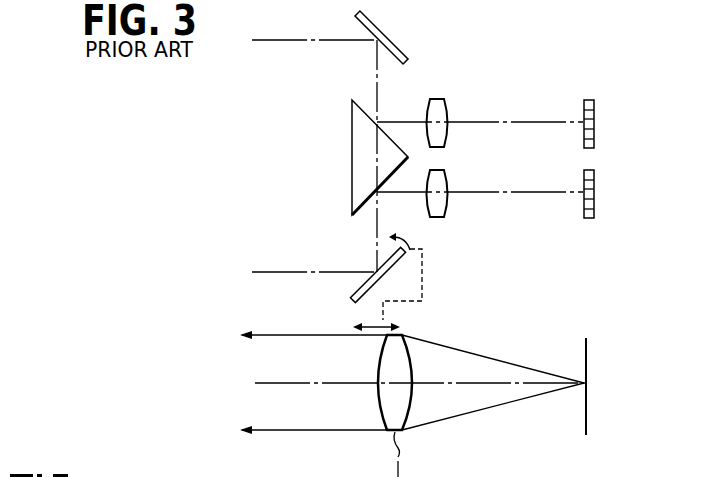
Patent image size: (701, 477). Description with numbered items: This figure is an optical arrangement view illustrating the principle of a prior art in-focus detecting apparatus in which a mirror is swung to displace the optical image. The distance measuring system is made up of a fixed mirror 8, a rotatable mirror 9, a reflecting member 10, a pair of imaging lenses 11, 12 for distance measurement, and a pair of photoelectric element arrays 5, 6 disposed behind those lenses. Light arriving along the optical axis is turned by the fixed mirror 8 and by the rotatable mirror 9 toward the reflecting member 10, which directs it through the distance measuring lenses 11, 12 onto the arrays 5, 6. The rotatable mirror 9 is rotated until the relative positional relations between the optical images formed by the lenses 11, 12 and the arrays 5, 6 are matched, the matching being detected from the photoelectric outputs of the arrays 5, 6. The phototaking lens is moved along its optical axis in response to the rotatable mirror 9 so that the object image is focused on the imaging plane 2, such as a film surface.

The imaging plane 2 is at (588, 398).
The photoelectric element array 5 is at (596, 108).
The photoelectric element array 6 is at (596, 193).
The fixed mirror 8 is at (398, 43).
The rotatable mirror 9 is at (404, 262).
The reflecting member 10 is at (366, 170).
The imaging lens for distance measurement 11 is at (449, 103).
The imaging lens for distance measurement 12 is at (450, 204).